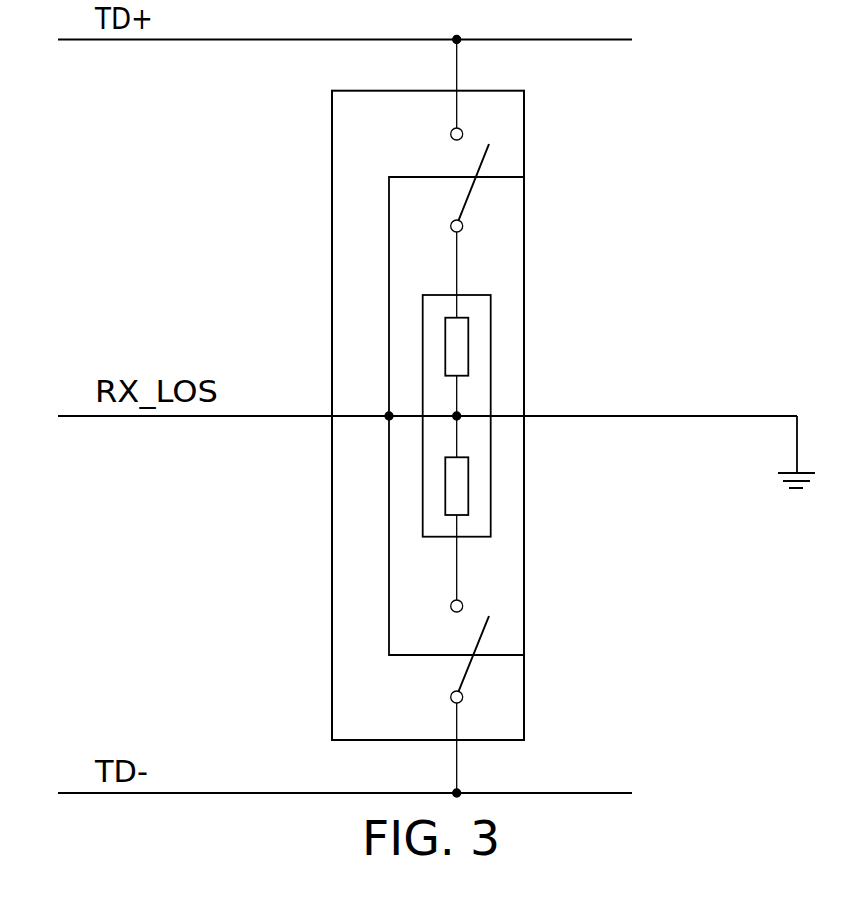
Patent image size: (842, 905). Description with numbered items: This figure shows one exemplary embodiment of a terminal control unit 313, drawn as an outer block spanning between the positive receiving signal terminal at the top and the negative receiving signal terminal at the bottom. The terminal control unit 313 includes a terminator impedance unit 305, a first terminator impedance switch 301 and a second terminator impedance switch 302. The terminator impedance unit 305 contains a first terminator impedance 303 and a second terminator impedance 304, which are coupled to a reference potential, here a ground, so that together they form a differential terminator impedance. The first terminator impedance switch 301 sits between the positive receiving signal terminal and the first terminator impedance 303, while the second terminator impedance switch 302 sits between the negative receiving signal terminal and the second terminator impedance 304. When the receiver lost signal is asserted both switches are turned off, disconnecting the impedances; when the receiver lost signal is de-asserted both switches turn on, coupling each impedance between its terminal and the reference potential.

The terminal control unit 313 is at (524, 120).
The first terminator impedance switch 301 is at (472, 193).
The second terminator impedance switch 302 is at (472, 667).
The terminator impedance unit 305 is at (491, 312).
The first terminator impedance 303 is at (468, 345).
The second terminator impedance 304 is at (468, 485).